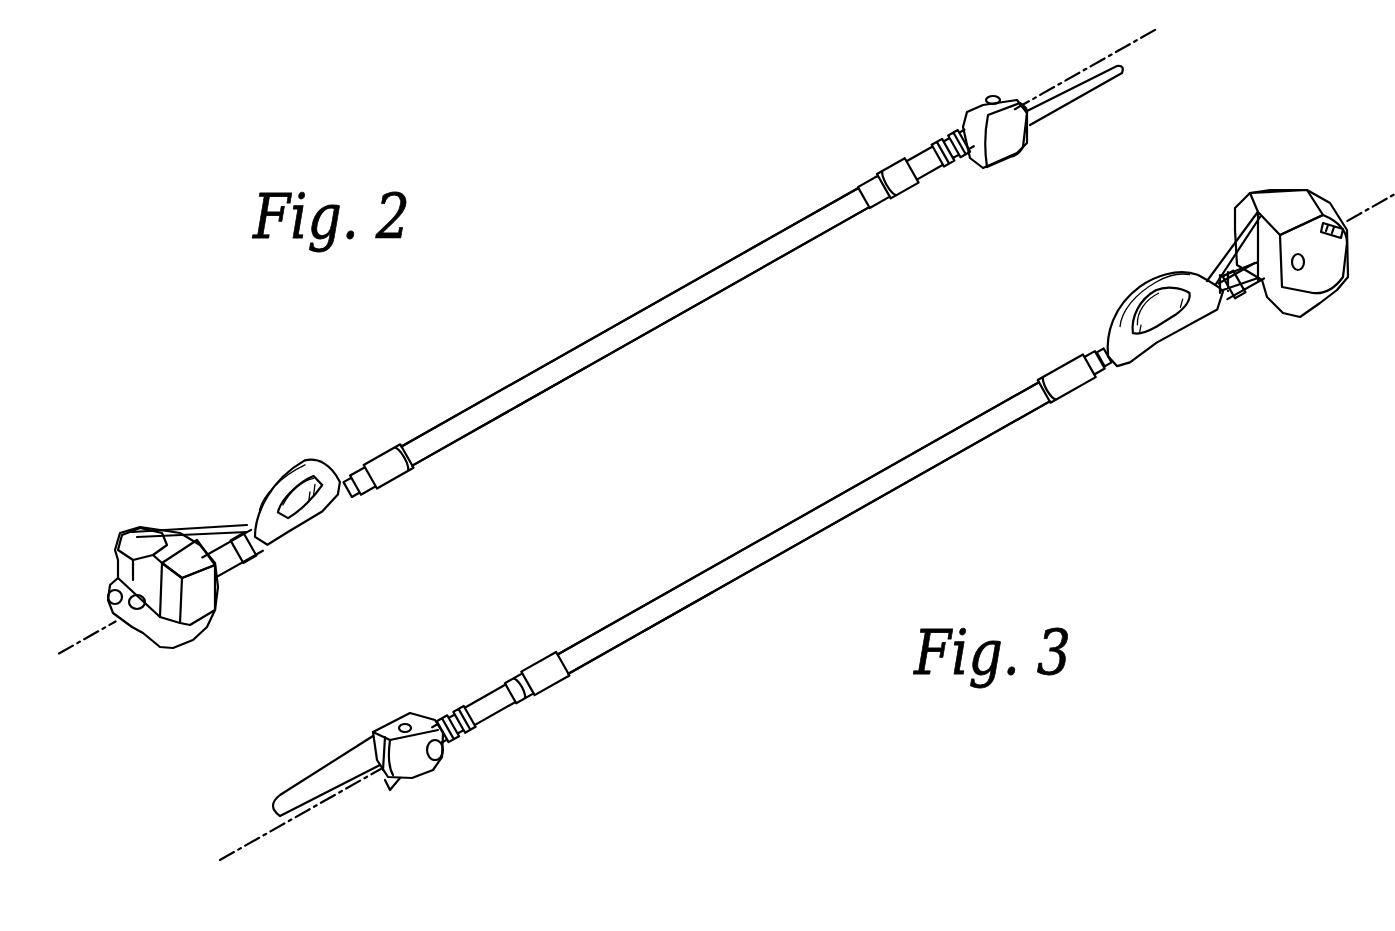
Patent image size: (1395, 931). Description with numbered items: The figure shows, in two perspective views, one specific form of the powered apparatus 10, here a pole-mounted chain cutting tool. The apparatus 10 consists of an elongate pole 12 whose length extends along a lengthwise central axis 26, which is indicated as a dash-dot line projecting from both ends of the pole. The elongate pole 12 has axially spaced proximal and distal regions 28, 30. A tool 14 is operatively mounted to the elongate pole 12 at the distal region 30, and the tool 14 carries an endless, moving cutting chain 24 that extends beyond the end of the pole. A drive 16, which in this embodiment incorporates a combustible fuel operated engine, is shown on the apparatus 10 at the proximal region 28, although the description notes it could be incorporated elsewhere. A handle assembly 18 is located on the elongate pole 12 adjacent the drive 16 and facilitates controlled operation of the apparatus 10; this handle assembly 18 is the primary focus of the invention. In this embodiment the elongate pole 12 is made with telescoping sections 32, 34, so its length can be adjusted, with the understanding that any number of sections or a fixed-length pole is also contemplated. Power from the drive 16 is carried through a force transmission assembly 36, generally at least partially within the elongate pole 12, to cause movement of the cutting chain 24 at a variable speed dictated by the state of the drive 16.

In FIG. 2, the powered apparatus 10 is at (588, 285).
In FIG. 3, the powered apparatus 10 is at (727, 507).
In FIG. 2, the elongate pole 12 is at (769, 263).
In FIG. 3, the elongate pole 12 is at (940, 446).
In FIG. 2, the tool 14 is at (1033, 99).
In FIG. 3, the tool 14 is at (426, 706).
In FIG. 2, the drive 16 is at (201, 636).
In FIG. 3, the drive 16 is at (1318, 193).
In FIG. 2, the handle assembly 18 is at (308, 455).
In FIG. 3, the handle assembly 18 is at (1170, 276).
In FIG. 2, the cutting chain 24 is at (1125, 73).
In FIG. 3, the cutting chain 24 is at (287, 788).
In FIG. 2, the lengthwise central axis 26 is at (88, 652).
In FIG. 3, the lengthwise central axis 26 is at (243, 846).
In FIG. 2, the proximal region 28 is at (358, 498).
In FIG. 3, the proximal region 28 is at (1114, 389).
In FIG. 2, the distal region 30 is at (943, 130).
In FIG. 3, the distal region 30 is at (479, 741).
In FIG. 2, the telescoping section 32 is at (822, 213).
In FIG. 3, the telescoping section 32 is at (600, 658).
In FIG. 2, the telescoping section 34 is at (927, 167).
In FIG. 3, the telescoping section 34 is at (507, 693).
In FIG. 2, the force transmission assembly 36 is at (545, 388).
In FIG. 3, the force transmission assembly 36 is at (682, 606).